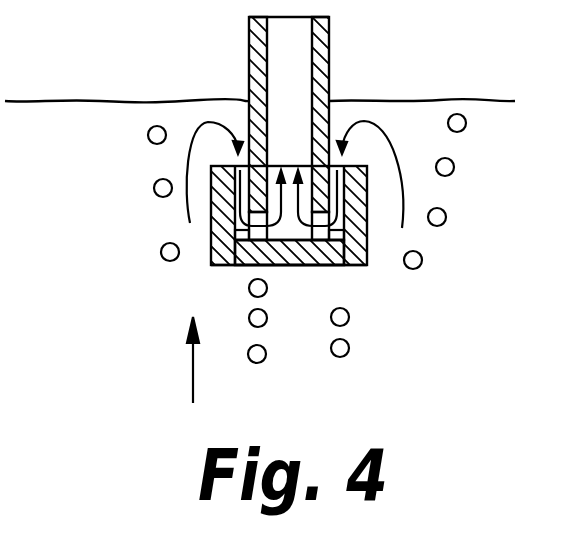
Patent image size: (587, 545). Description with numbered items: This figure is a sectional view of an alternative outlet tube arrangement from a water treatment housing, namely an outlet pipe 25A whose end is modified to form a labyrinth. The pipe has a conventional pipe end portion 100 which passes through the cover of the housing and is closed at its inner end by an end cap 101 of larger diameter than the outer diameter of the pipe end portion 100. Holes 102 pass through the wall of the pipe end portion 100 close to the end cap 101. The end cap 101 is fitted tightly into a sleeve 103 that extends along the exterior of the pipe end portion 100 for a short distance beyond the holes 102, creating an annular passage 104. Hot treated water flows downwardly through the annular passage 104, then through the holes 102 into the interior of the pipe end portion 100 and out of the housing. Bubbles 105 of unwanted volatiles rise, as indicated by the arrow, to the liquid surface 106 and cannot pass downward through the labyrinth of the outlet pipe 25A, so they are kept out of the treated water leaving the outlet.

The outlet pipe 25A is at (352, 85).
The pipe end portion 100 is at (329, 53).
The end cap 101 is at (333, 266).
The holes 102 is at (235, 231).
The sleeve 103 is at (366, 260).
The annular passage 104 is at (211, 168).
The bubbles 105 is at (163, 259).
The liquid surface 106 is at (102, 100).